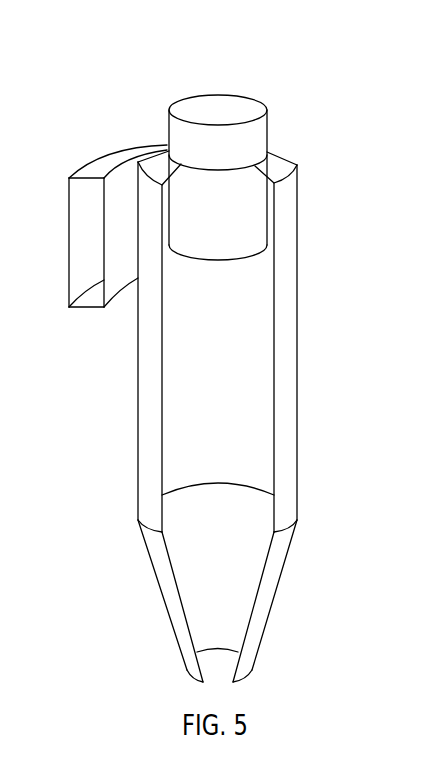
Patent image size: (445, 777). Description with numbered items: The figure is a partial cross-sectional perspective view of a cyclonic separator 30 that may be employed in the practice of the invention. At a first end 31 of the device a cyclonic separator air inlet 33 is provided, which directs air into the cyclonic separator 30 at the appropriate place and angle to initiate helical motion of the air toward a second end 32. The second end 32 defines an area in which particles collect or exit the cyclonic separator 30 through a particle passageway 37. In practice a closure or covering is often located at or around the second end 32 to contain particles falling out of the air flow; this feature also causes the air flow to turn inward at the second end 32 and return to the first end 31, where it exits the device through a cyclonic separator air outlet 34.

The cyclonic separator 30 is at (377, 92).
The first end 31 is at (288, 225).
The second end 32 is at (263, 605).
The cyclonic separator air inlet 33 is at (100, 159).
The cyclonic separator air outlet 34 is at (217, 98).
The particle passageway 37 is at (265, 690).